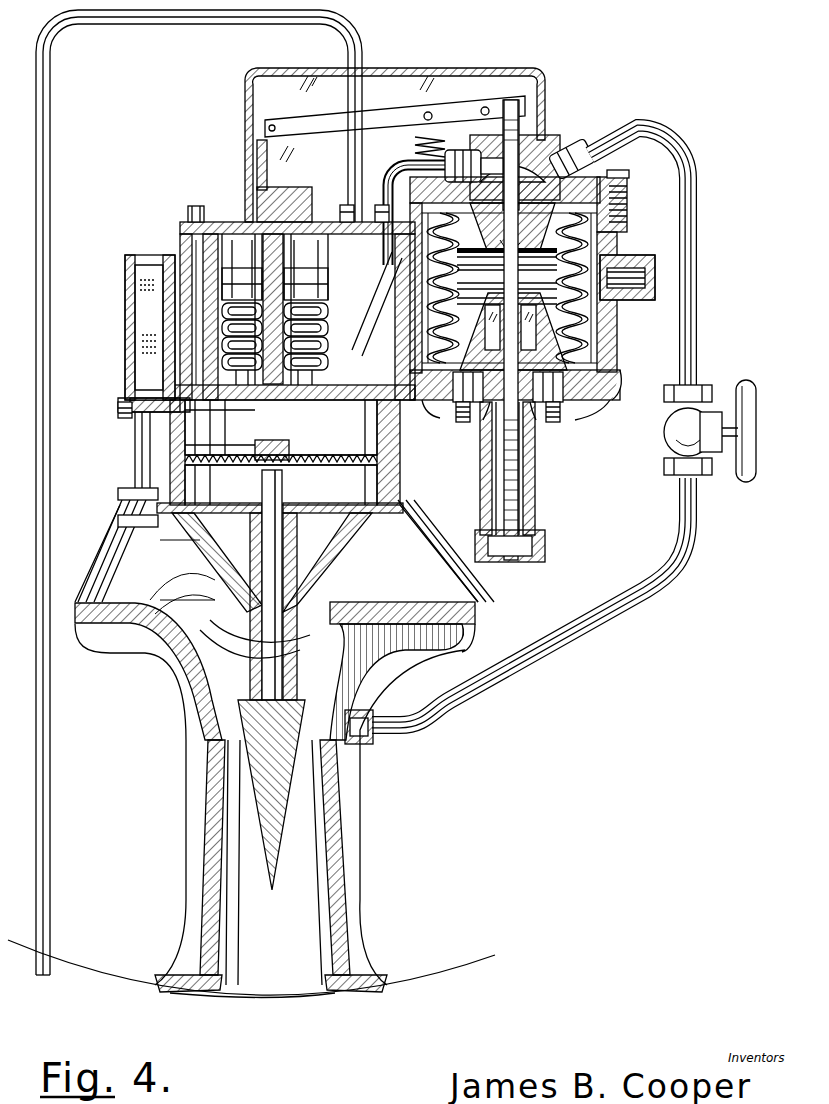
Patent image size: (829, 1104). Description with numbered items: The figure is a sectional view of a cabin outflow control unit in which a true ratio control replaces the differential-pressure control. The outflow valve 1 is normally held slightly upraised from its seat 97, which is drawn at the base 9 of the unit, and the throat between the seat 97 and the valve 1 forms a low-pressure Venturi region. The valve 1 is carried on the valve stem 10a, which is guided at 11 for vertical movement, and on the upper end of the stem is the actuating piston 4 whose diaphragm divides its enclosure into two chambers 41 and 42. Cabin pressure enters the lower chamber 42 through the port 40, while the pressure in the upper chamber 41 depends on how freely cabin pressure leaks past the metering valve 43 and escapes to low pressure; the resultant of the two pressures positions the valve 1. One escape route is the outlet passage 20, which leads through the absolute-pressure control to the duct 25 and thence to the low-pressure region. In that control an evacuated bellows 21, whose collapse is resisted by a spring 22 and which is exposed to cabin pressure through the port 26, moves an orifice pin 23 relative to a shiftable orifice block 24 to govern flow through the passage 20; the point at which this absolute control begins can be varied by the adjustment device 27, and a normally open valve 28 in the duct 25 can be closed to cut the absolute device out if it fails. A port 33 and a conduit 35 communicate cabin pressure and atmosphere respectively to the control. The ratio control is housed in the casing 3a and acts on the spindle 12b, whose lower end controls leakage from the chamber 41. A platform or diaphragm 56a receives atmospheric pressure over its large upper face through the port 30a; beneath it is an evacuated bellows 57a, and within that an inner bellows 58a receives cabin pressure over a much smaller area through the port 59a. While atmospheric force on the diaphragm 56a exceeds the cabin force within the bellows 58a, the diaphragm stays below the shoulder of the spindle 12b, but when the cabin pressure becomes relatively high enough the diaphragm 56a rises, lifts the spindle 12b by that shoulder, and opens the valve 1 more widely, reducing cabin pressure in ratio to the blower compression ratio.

The valve 1 is at (253, 752).
The casing 3a is at (225, 222).
The actuating piston 4 is at (362, 456).
The base 9 is at (104, 972).
The valve stem 10a is at (300, 642).
The guide 11 is at (300, 548).
The spindle 12b is at (268, 418).
The outlet passage 20 is at (398, 402).
The evacuated bellows 21 is at (585, 333).
The spring 22 is at (620, 236).
The orifice pin 23 is at (560, 140).
The orifice block 24 is at (548, 114).
The duct 25 is at (562, 660).
The port 26 is at (655, 280).
The adjustment device 27 is at (536, 500).
The valve 28 is at (712, 456).
The port 30a is at (384, 314).
The port 33 is at (160, 330).
The conduit 35 is at (52, 115).
The port 40 is at (150, 488).
The chamber 41 is at (281, 427).
The chamber 42 is at (281, 485).
The metering valve 43 is at (150, 434).
The platform 56a is at (300, 312).
The evacuated bellows 57a is at (235, 278).
The bellows 58a is at (235, 300).
The port 59a is at (148, 394).
The seat 97 is at (225, 685).